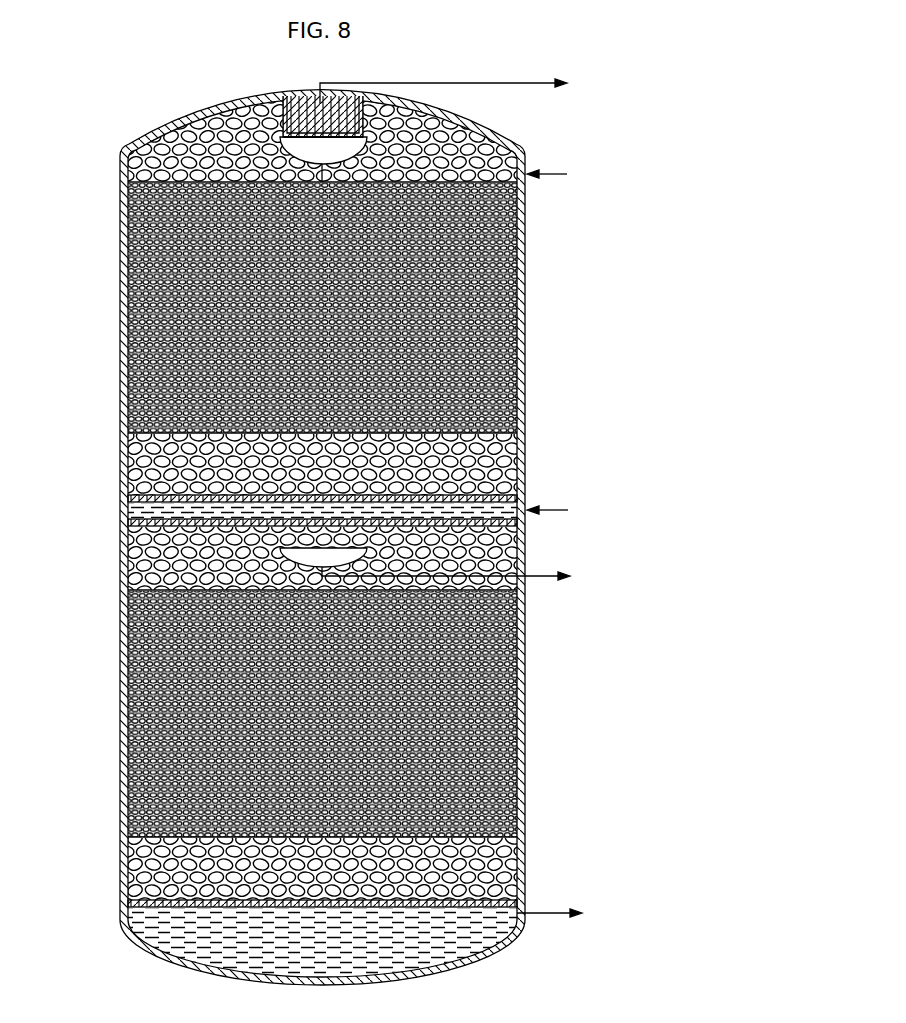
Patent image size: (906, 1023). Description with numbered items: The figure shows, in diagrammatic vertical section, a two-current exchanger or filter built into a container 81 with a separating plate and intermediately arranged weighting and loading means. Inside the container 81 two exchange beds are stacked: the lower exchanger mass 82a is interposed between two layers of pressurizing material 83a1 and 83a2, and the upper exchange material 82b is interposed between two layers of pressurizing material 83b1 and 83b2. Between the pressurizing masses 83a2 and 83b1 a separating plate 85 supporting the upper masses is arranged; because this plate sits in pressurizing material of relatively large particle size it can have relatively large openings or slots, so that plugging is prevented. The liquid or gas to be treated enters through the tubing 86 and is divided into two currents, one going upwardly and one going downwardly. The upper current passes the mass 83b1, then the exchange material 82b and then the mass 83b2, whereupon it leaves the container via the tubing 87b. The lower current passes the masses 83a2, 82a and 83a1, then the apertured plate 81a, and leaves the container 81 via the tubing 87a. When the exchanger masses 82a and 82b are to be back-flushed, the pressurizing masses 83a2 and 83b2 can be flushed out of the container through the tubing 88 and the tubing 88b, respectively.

The container 81 is at (525, 798).
The apertured plate 81a is at (507, 893).
The lower exchanger mass 82a is at (500, 723).
The upper exchange material 82b is at (500, 298).
The layer of pressurizing material 83a1 is at (147, 862).
The layer of pressurizing material 83a2 is at (138, 566).
The layer of pressurizing material 83b1 is at (147, 470).
The layer of pressurizing material 83b2 is at (147, 170).
The liquid distributor tray 85 is at (140, 514).
The tubing 86 is at (553, 508).
The tubing 87a is at (547, 916).
The tubing 87b is at (503, 80).
The intermediate inlet line 88 is at (540, 580).
The tubing 88b is at (530, 178).